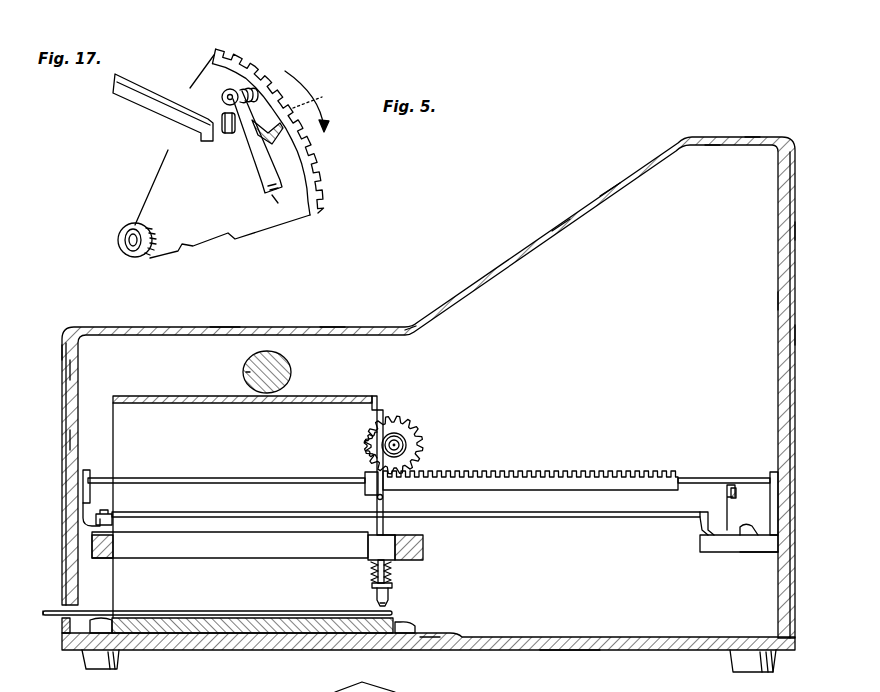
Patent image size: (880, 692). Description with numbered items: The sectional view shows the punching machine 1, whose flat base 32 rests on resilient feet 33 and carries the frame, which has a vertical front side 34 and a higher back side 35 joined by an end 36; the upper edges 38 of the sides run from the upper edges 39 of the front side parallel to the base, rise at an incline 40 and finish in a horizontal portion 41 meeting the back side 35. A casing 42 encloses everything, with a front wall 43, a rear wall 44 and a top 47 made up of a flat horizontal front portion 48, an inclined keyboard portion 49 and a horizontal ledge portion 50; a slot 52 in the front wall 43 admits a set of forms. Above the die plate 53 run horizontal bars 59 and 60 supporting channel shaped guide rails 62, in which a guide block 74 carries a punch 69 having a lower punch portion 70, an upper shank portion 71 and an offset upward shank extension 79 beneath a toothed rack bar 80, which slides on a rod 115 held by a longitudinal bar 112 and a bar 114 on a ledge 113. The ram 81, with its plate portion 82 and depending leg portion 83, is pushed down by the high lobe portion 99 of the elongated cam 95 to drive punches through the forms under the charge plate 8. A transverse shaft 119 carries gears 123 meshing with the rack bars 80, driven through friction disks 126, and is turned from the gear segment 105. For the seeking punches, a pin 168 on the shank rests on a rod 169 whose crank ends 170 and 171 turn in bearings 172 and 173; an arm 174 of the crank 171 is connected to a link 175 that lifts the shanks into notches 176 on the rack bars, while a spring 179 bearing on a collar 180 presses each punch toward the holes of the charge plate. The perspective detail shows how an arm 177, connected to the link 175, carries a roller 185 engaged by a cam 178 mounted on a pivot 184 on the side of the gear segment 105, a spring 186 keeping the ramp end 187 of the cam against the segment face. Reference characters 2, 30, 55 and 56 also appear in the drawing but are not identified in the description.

In FIG. 5, the punching machine 1 is at (796, 148).
In FIG. 5, the base plate 2 is at (196, 650).
In FIG. 5, the charge plate 8 is at (170, 611).
In FIG. 5, the support 30 is at (387, 685).
In FIG. 5, the base 32 is at (628, 651).
In FIG. 5, the resilient feet 33 is at (120, 661).
In FIG. 5, the front side 34 is at (68, 371).
In FIG. 5, the back side 35 is at (784, 300).
In FIG. 5, the end 36 is at (566, 651).
In FIG. 5, the upper edges of the sides 38 is at (226, 326).
In FIG. 5, the upper edges of the front side 39 is at (70, 330).
In FIG. 5, the incline 40 is at (560, 229).
In FIG. 5, the horizontal portion 41 is at (752, 142).
In FIG. 5, the casing 42 is at (802, 235).
In FIG. 5, the front wall 43 is at (72, 440).
In FIG. 5, the rear wall 44 is at (796, 337).
In FIG. 5, the top 47 is at (403, 322).
In FIG. 5, the flat horizontal front portion 48 is at (331, 326).
In FIG. 5, the inclined keyboard portion 49 is at (611, 187).
In FIG. 5, the horizontal ledge portion 50 is at (713, 148).
In FIG. 5, the slot 52 is at (56, 611).
In FIG. 5, the die plate 53 is at (286, 634).
In FIG. 5, the stop 55 is at (412, 624).
In FIG. 5, the base step 56 is at (428, 636).
In FIG. 5, the horizontal bar 59 is at (113, 545).
In FIG. 5, the horizontal bar 60 is at (424, 547).
In FIG. 5, the channel shaped guide rails 62 is at (262, 559).
In FIG. 5, the punches 69 is at (390, 604).
In FIG. 5, the lower punch portion 70 is at (377, 598).
In FIG. 5, the upper shank portion 71 is at (378, 574).
In FIG. 5, the guide block 74 is at (369, 546).
In FIG. 5, the offset upward shank extension 79 is at (384, 412).
In FIG. 5, the punch transfer rack bar 80 is at (521, 471).
In FIG. 5, the ram 81 is at (374, 397).
In FIG. 5, the plate portion 82 is at (214, 404).
In FIG. 5, the depending leg portion 83 is at (118, 448).
In FIG. 5, the elongated cam 95 is at (270, 360).
In FIG. 5, the high lobe portion 99 is at (248, 380).
In FIG. 17, the gear segment 105 is at (318, 160).
In FIG. 5, the longitudinal bar 112 is at (84, 481).
In FIG. 5, the ledge 113 is at (745, 553).
In FIG. 5, the bar 114 is at (780, 478).
In FIG. 5, the rod 115 is at (300, 467).
In FIG. 5, the transverse shaft 119 is at (404, 443).
In FIG. 5, the gears 123 is at (413, 426).
In FIG. 5, the friction disk 126 is at (420, 449).
In FIG. 5, the laterally extending pins 168 is at (384, 497).
In FIG. 5, the rods 169 is at (574, 518).
In FIG. 5, the crank end 170 is at (112, 514).
In FIG. 5, the crank end 171 is at (702, 526).
In FIG. 5, the bearing 172 is at (88, 516).
In FIG. 5, the bearing 173 is at (702, 550).
In FIG. 5, the arm 174 is at (727, 497).
In FIG. 5, the link 175 is at (746, 528).
In FIG. 5, the notches 176 is at (365, 488).
In FIG. 17, the arm 177 is at (168, 125).
In FIG. 17, the cam 178 is at (252, 160).
In FIG. 5, the spring 179 is at (396, 540).
In FIG. 5, the collar 180 is at (392, 585).
In FIG. 17, the pivot 184 is at (313, 101).
In FIG. 17, the roller 185 is at (218, 120).
In FIG. 17, the spring 186 is at (267, 96).
In FIG. 17, the ramp end 187 is at (276, 203).